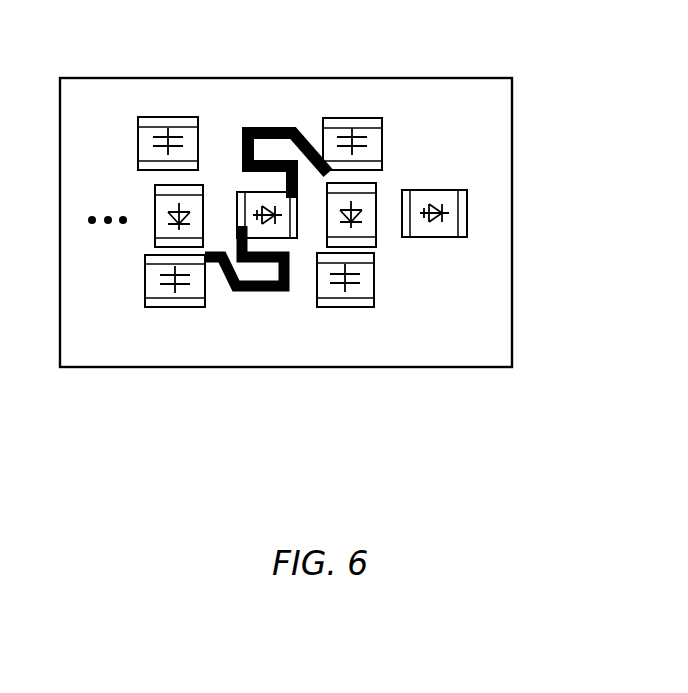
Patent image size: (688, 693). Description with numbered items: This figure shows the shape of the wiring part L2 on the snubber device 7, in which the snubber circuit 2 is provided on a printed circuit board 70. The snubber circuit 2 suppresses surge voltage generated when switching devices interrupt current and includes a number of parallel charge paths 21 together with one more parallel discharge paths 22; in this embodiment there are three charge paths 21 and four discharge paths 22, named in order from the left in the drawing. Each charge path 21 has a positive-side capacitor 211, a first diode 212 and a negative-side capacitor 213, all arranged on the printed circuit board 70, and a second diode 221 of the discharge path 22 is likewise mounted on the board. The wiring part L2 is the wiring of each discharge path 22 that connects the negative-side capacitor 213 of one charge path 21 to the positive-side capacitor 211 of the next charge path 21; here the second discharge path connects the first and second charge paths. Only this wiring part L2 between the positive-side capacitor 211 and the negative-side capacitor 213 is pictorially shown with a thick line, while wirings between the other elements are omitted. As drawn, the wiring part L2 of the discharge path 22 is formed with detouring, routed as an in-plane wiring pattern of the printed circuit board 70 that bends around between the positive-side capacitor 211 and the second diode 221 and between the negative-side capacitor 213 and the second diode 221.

The snubber circuit 2 is at (318, 186).
The snubber device 7 is at (318, 186).
The printed circuit board 70 is at (500, 76).
The charge path 21 is at (285, 170).
The positive-side capacitor 211 is at (138, 133).
The first diode 212 is at (155, 192).
The negative-side capacitor 213 is at (146, 271).
The second diode 221 is at (237, 192).
The discharge path 22 is at (283, 293).
The wiring part L2 is at (262, 331).